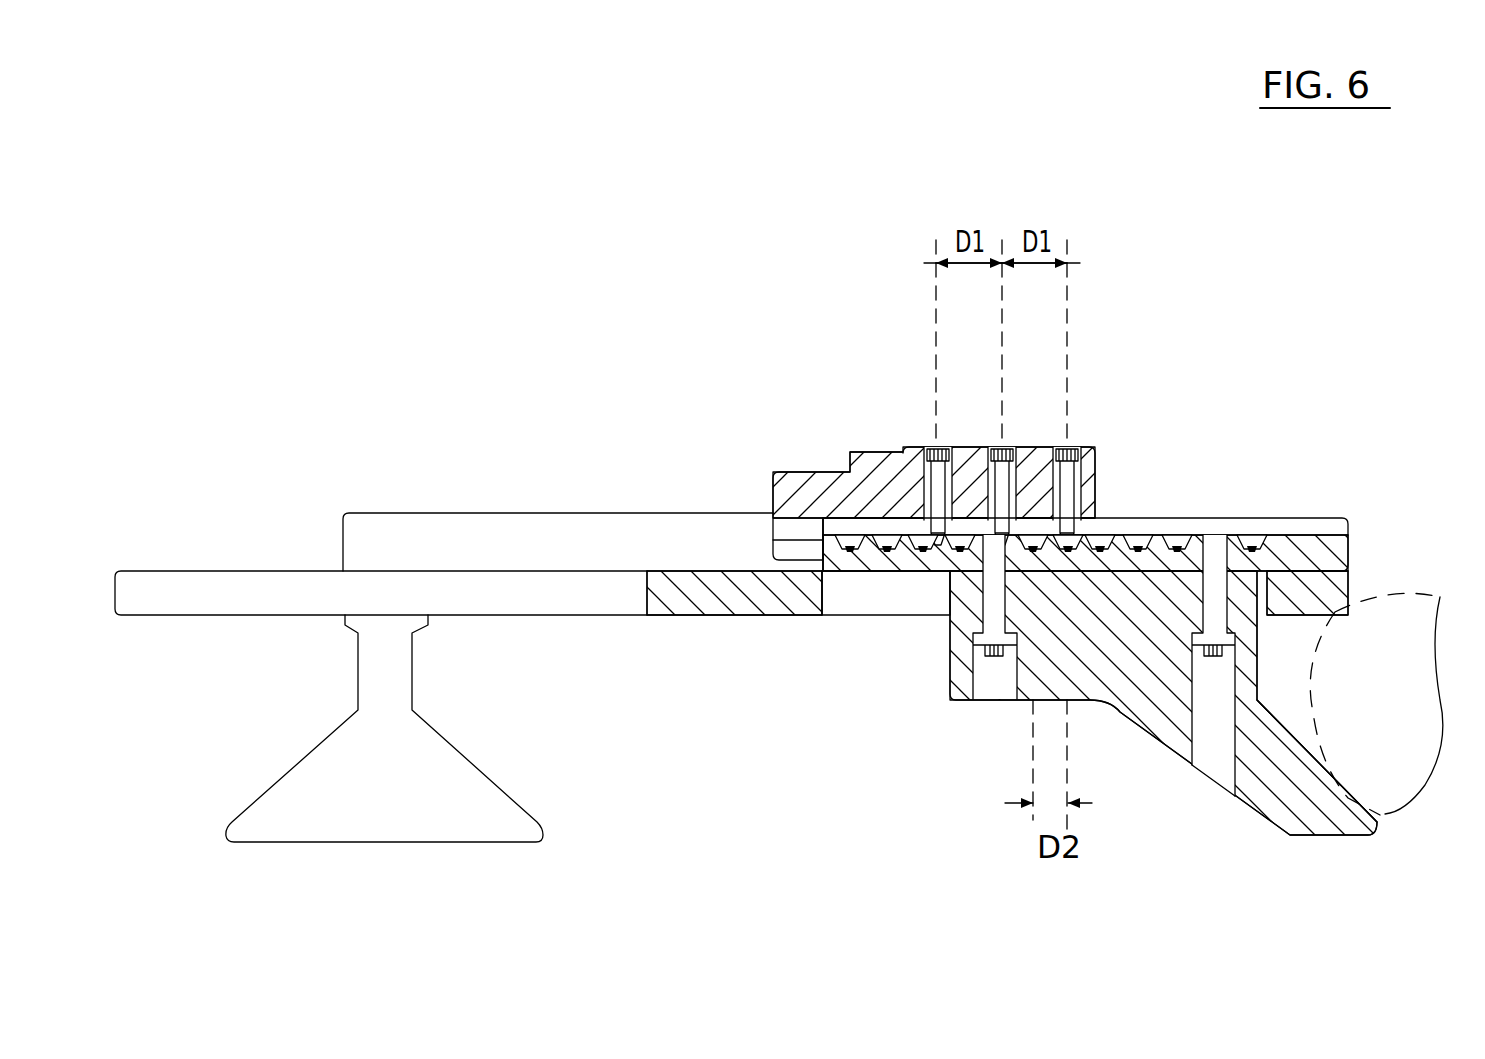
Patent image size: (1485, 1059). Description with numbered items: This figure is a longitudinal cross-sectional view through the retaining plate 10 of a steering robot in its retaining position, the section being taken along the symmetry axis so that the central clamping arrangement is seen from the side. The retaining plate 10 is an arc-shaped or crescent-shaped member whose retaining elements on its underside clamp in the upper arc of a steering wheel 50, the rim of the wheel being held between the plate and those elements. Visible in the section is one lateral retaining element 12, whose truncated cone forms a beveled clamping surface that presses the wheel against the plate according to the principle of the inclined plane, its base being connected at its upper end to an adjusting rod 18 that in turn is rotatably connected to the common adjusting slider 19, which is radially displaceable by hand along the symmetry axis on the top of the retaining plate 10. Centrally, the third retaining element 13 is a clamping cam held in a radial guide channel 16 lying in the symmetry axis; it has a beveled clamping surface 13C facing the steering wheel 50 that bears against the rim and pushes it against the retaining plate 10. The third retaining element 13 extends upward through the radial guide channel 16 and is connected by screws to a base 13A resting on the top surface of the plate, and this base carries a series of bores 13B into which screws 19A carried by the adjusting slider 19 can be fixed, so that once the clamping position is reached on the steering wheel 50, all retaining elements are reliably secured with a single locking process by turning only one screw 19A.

The retaining plate 10 is at (261, 588).
The retaining element 12 is at (460, 729).
The third retaining element 13 is at (1140, 695).
The base 13A is at (1309, 553).
The bores 13B is at (1214, 526).
The beveled clamping surface 13C is at (1318, 757).
The radial guide channel 16 is at (899, 600).
The adjusting rod 18 is at (548, 536).
The adjusting slider 19 is at (814, 466).
The screws 19A is at (1066, 440).
The steering wheel 50 is at (1417, 613).